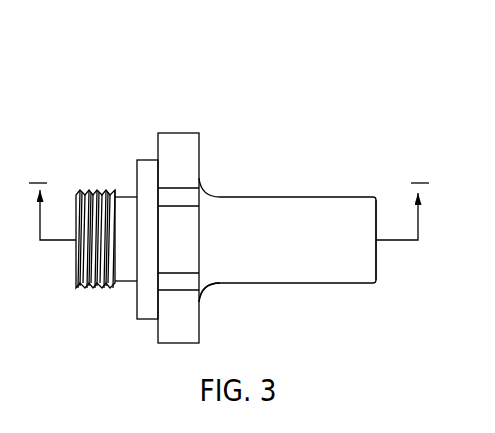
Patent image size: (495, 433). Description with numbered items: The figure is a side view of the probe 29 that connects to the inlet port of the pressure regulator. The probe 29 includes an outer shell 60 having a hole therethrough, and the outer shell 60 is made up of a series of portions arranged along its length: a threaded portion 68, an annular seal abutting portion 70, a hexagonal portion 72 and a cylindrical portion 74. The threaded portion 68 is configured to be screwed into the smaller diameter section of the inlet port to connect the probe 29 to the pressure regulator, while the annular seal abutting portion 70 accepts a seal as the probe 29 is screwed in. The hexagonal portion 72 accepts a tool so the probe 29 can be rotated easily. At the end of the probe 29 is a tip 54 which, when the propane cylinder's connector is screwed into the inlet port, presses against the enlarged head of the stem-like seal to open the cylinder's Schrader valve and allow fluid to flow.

The probe 29 is at (147, 87).
The tip 54 is at (377, 258).
The outer shell 60 is at (260, 197).
The threaded portion 68 is at (93, 188).
The annular seal abutting portion 70 is at (147, 159).
The hexagonal portion 72 is at (188, 133).
The cylindrical portion 74 is at (258, 283).